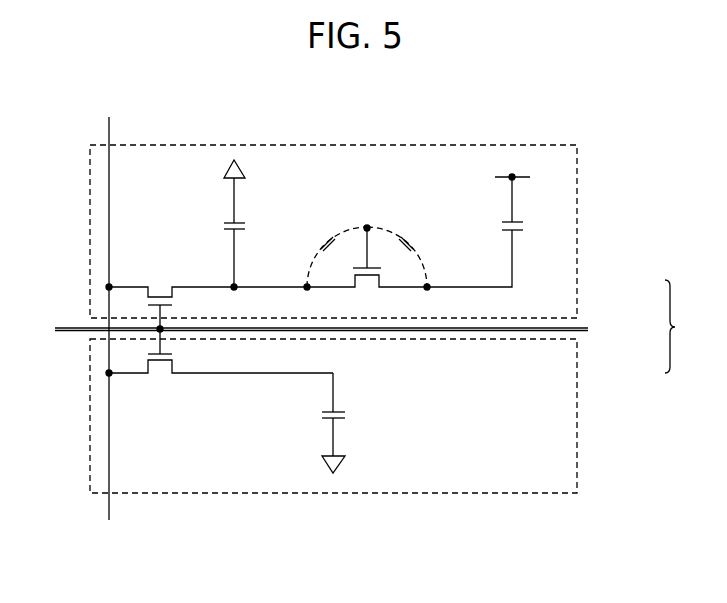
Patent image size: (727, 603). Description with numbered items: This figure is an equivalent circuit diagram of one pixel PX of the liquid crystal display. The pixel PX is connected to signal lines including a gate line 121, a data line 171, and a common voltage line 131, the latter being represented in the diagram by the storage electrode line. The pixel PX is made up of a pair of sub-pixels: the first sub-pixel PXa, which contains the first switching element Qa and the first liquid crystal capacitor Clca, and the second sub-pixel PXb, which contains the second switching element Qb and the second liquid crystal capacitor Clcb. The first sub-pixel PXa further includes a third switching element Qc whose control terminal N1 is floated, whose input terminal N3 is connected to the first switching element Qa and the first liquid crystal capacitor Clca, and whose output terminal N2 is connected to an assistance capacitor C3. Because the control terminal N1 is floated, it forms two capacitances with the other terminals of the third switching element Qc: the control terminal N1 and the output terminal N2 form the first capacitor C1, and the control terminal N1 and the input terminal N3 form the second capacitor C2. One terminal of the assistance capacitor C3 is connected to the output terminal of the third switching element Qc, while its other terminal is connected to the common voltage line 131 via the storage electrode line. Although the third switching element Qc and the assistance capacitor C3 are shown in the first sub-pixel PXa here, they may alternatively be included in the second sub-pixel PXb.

The data line 171 is at (111, 302).
The gate line 121 is at (303, 329).
The common voltage line 131 is at (530, 176).
The first switching element Qa is at (170, 292).
The second switching element Qb is at (219, 366).
The third switching element Qc is at (367, 269).
The first liquid crystal capacitor Clca is at (212, 225).
The second liquid crystal capacitor Clcb is at (356, 423).
The first capacitor C1 is at (402, 253).
The second capacitor C2 is at (333, 253).
The assistance capacitor C3 is at (490, 232).
The control terminal N1 is at (366, 214).
The output terminal N2 is at (439, 275).
The input terminal N3 is at (272, 275).
The first sub-pixel PXa is at (577, 297).
The second sub-pixel PXb is at (577, 355).
The pixel PX is at (682, 326).